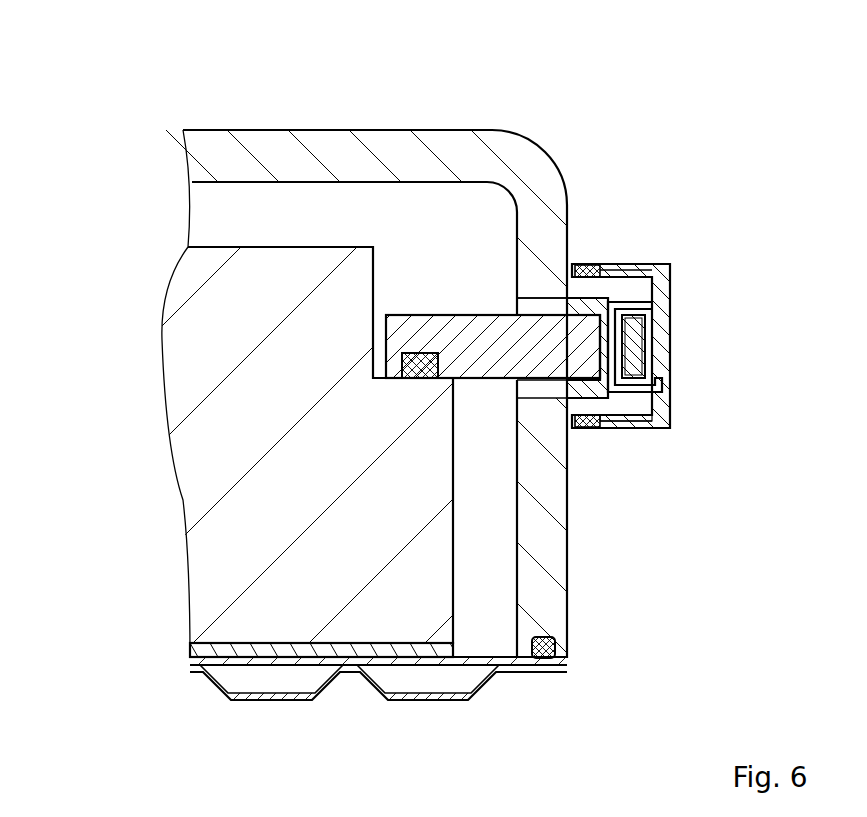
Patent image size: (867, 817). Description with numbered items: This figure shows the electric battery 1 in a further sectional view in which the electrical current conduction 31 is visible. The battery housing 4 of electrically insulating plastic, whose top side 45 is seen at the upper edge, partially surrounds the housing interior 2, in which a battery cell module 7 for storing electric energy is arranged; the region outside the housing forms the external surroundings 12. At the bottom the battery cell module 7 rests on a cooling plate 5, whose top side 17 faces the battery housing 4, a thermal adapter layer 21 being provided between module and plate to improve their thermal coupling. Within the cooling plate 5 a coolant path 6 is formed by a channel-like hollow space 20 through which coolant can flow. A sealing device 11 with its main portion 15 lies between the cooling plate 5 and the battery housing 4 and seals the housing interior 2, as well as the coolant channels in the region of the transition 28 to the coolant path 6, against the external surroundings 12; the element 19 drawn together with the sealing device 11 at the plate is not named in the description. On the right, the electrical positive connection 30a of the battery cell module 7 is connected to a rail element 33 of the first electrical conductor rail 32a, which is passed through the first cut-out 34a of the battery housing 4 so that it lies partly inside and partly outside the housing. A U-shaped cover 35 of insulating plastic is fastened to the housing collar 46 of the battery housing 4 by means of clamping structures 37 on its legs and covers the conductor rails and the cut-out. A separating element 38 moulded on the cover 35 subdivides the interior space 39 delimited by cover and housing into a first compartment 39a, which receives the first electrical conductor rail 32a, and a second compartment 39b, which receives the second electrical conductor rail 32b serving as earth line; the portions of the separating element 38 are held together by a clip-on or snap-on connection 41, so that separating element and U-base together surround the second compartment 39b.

The electric battery 1 is at (652, 160).
The housing interior 2 is at (262, 124).
The battery housing 4 is at (408, 347).
The cooling plate 5 is at (416, 714).
The coolant path 6 is at (378, 708).
The battery cell module 7 is at (249, 409).
The sealing device 11 is at (413, 693).
The external surroundings 12 is at (697, 556).
The main portion 15 is at (545, 667).
The top side 17 is at (272, 646).
The bottom wall 19 is at (413, 693).
The hollow space 20 is at (270, 698).
The thermal adapter layer 21 is at (190, 657).
The transition 28 is at (558, 648).
The electrical positive connection 30a is at (414, 350).
The electrical current conduction 31 is at (622, 384).
The first electrical conductor rail 32a is at (667, 442).
The second electrical conductor rail 32b is at (636, 345).
The rail element 33 is at (604, 422).
The first cut-out 34a is at (518, 300).
The cover 35 is at (635, 342).
The clamping structure 37 is at (585, 264).
The separating element 38 is at (596, 344).
The interior space 39 is at (695, 321).
The first compartment 39a is at (604, 270).
The second compartment 39b is at (652, 330).
The clip-on connection or snap-on connection 41 is at (663, 388).
The top side 45 is at (408, 347).
The housing collar 46 is at (684, 300).